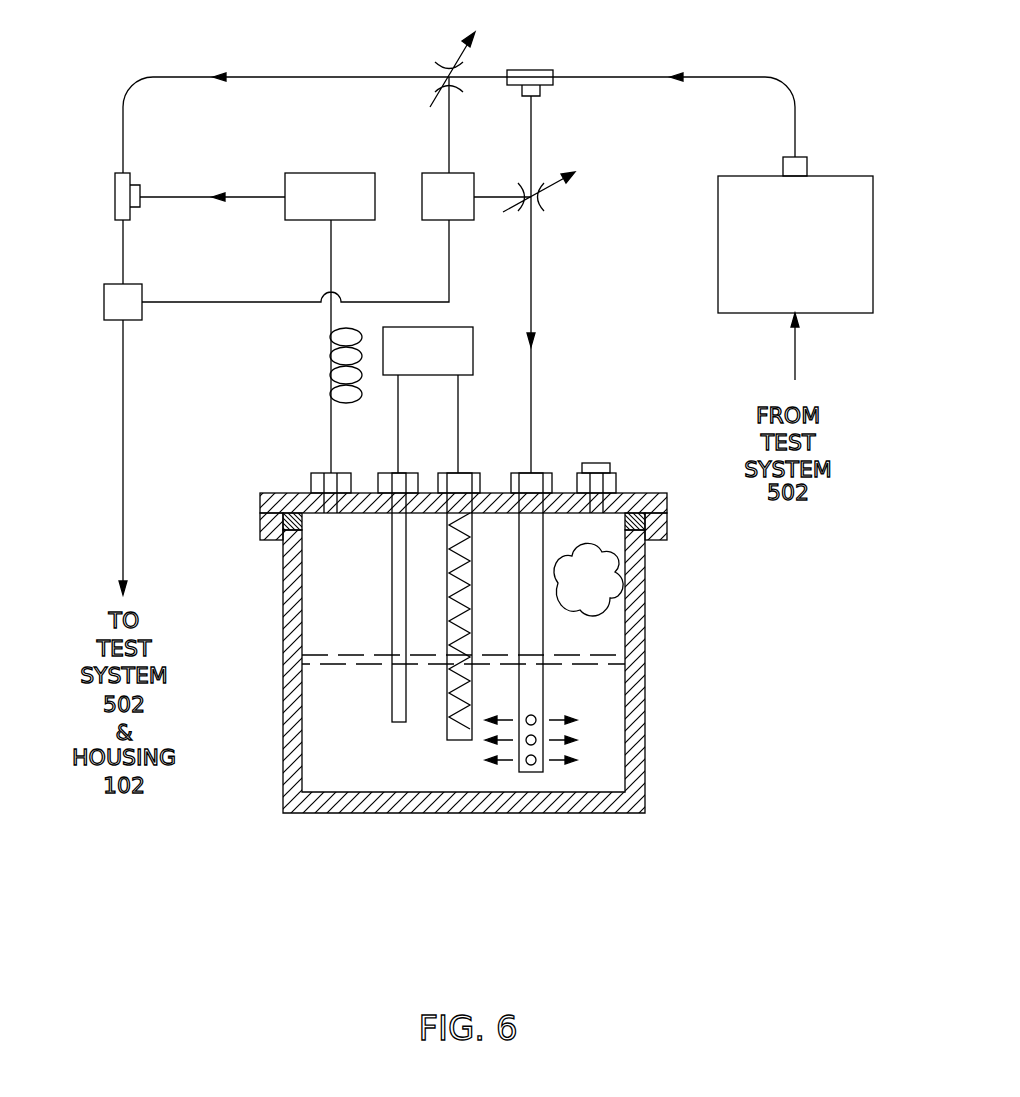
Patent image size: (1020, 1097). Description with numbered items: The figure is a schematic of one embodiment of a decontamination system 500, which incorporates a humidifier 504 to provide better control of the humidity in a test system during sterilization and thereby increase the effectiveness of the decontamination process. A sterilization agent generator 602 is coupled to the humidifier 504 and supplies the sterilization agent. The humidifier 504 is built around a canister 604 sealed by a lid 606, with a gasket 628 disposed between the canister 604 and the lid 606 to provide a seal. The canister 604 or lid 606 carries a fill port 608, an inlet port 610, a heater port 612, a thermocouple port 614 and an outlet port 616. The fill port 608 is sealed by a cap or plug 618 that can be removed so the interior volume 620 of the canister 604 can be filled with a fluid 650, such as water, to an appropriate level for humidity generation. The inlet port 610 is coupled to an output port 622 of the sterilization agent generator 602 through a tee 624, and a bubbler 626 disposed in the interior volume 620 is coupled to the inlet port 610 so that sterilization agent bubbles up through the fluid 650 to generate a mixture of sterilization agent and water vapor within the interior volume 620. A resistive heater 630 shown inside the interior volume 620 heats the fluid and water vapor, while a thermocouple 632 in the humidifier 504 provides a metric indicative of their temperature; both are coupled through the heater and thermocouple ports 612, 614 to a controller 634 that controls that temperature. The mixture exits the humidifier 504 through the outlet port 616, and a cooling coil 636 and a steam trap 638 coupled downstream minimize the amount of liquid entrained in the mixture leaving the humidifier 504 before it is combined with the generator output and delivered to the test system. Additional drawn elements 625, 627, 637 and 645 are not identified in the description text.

The decontamination system 500 is at (712, 733).
The humidifier 504 is at (275, 680).
The sterilization agent generator 602 is at (778, 254).
The canister 604 is at (283, 772).
The lid 606 is at (262, 496).
The fill port 608 is at (617, 483).
The inlet port 610 is at (540, 473).
The heater port 612 is at (480, 473).
The thermocouple port 614 is at (415, 473).
The outlet port 616 is at (345, 473).
The cap or plug 618 is at (600, 463).
The interior volume 620 is at (329, 611).
The output port 622 is at (807, 165).
The tee 624 is at (545, 88).
The valve 625 is at (545, 205).
The bubbler 626 is at (588, 594).
The valve 627 is at (443, 67).
The gasket 628 is at (650, 480).
The resistive heater 630 is at (447, 707).
The thermocouple 632 is at (392, 681).
The controller 634 is at (411, 362).
The cooling coil 636 is at (330, 367).
The filter 637 is at (104, 303).
The steam trap 638 is at (313, 208).
The tee fitting 645 is at (135, 215).
The fluid 650 is at (592, 697).